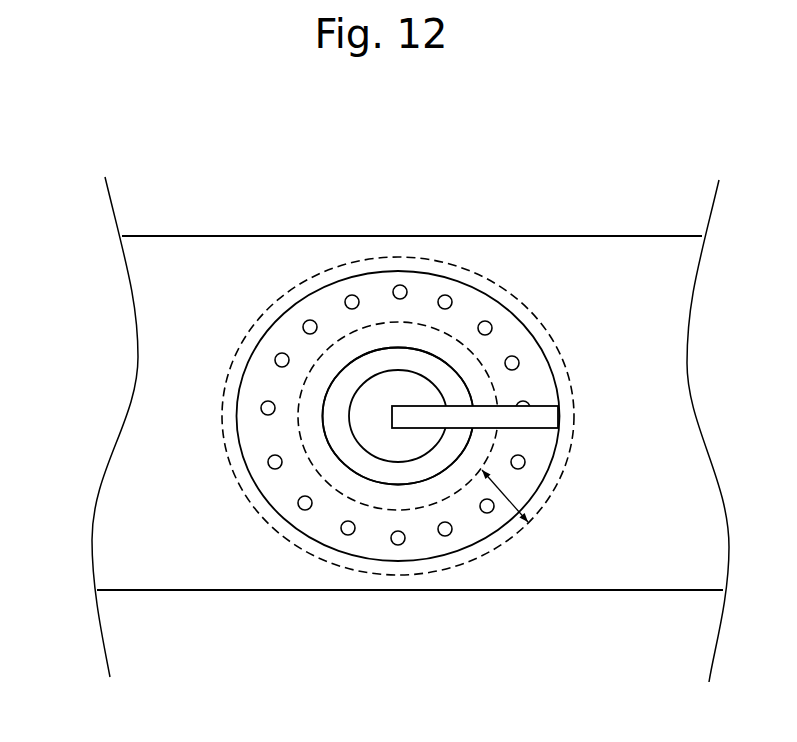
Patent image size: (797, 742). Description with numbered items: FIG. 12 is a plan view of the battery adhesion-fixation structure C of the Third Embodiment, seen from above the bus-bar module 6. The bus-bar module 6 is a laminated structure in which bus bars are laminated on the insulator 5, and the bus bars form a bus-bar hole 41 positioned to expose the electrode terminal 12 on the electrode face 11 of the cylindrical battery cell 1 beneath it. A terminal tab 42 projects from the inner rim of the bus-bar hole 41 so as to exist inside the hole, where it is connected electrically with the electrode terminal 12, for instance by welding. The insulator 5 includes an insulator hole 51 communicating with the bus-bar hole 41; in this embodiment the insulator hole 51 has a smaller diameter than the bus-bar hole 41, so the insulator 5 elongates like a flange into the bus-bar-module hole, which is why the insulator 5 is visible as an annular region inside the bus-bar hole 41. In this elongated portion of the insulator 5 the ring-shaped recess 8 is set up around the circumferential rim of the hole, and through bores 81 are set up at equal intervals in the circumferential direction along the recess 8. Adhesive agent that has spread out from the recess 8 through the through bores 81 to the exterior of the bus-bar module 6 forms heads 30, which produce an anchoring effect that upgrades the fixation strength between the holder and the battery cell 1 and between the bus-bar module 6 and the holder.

The battery adhesion-fixation structure C is at (50, 168).
The battery cell 1 is at (342, 306).
The electrode face 11 is at (397, 352).
The electrode terminal 12 is at (428, 387).
The insulator 5 is at (287, 338).
The insulator hole 51 is at (325, 393).
The bus-bar hole 41 is at (536, 340).
The terminal tab 42 is at (537, 415).
The bus-bar module 6 is at (617, 293).
The recess 8 is at (510, 500).
The through bore 81 is at (489, 513).
The head 30 is at (300, 513).